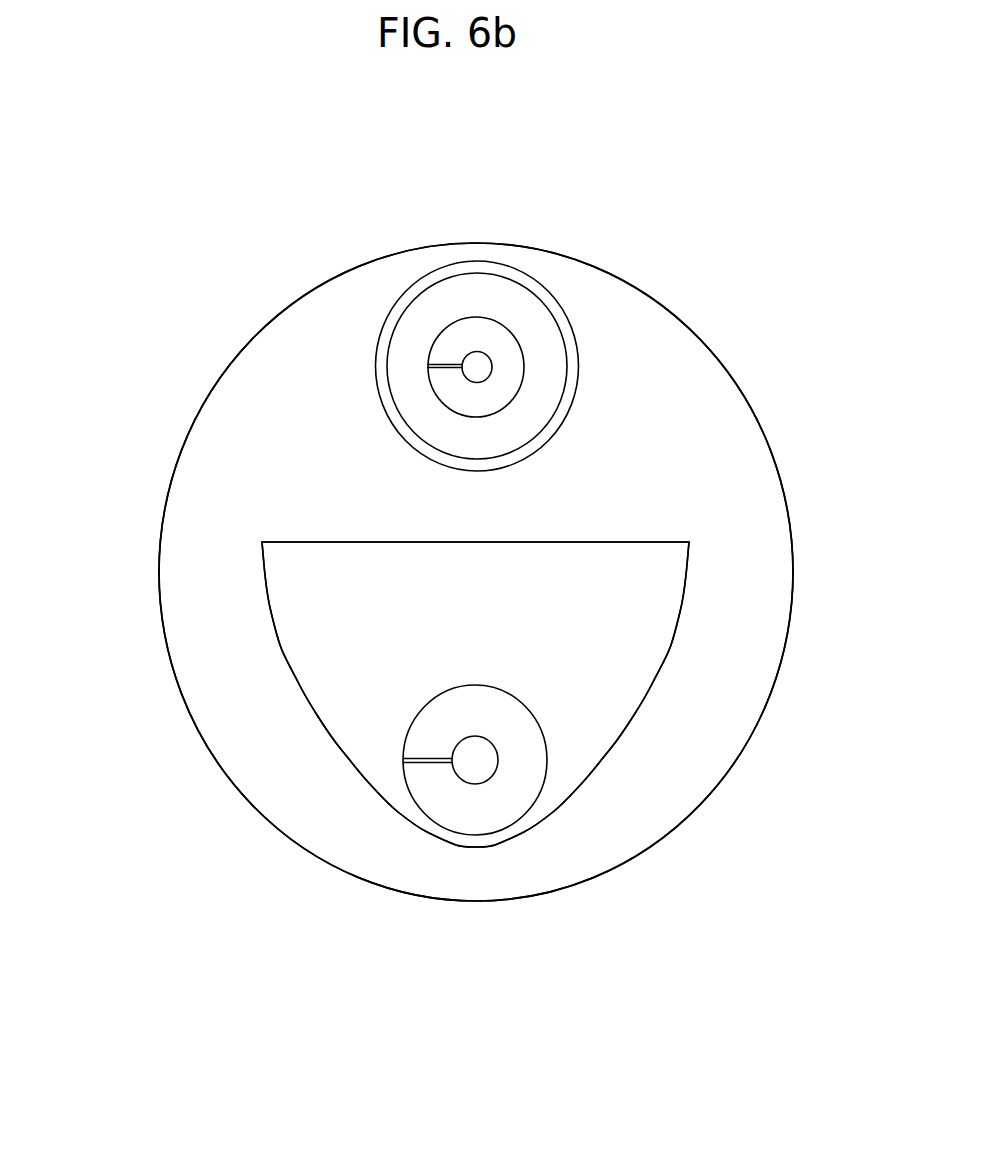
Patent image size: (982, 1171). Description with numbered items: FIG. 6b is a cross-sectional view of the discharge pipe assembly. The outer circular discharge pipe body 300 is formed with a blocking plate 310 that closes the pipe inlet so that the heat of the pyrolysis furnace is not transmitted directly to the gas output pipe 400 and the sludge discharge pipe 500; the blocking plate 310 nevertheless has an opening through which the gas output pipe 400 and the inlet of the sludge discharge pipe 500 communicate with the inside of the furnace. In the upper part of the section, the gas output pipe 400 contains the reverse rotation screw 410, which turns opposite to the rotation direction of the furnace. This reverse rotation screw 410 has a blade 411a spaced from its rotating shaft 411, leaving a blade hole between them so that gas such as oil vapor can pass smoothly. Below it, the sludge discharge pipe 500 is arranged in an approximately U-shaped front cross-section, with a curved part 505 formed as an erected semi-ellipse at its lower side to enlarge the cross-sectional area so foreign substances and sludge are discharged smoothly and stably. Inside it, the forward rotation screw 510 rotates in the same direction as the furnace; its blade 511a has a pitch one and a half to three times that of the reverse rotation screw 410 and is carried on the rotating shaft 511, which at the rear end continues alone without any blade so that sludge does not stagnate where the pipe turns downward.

The discharge pipe body 300 is at (257, 840).
The blocking plate 310 is at (242, 364).
The gas output pipe 400 is at (441, 243).
The reverse rotation screw 410 is at (486, 298).
The rotating shaft 411 is at (482, 362).
The blade 411a is at (447, 347).
The sludge discharge pipe 500 is at (279, 684).
The curved part 505 is at (273, 618).
The forward rotation screw 510 is at (562, 788).
The rotating shaft 511 is at (473, 770).
The blade 511a is at (405, 787).